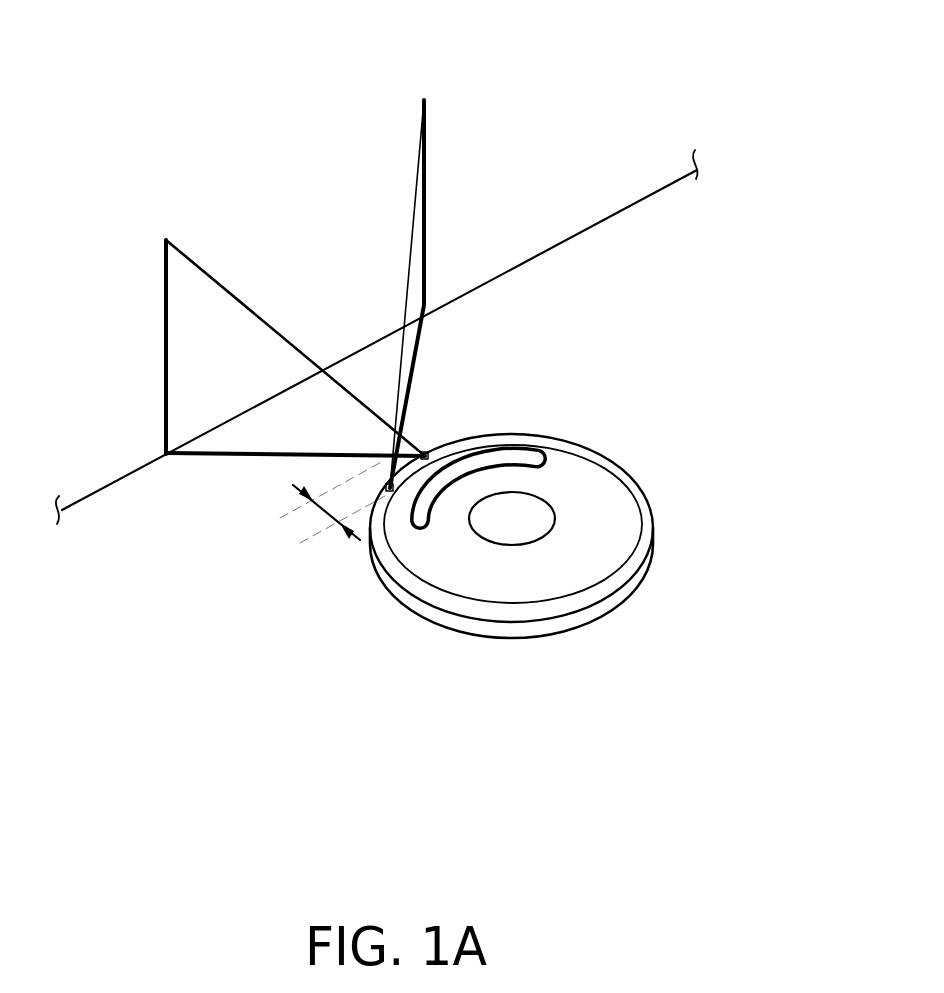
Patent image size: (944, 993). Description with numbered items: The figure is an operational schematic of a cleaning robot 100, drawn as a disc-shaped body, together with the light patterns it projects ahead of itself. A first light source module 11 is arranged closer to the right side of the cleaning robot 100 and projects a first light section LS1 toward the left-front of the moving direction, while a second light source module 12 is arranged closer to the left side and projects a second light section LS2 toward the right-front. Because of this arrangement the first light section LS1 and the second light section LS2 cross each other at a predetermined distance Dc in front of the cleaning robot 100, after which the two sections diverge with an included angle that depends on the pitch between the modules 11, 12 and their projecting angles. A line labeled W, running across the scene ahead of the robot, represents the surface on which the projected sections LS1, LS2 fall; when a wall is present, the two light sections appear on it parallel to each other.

The cleaning robot 100 is at (640, 492).
The first light source module 11 is at (427, 457).
The second light source module 12 is at (390, 488).
The first light section LS1 is at (166, 243).
The second light section LS2 is at (427, 110).
The wafer axis / scanning direction W is at (621, 180).
The predetermined distance Dc is at (332, 501).